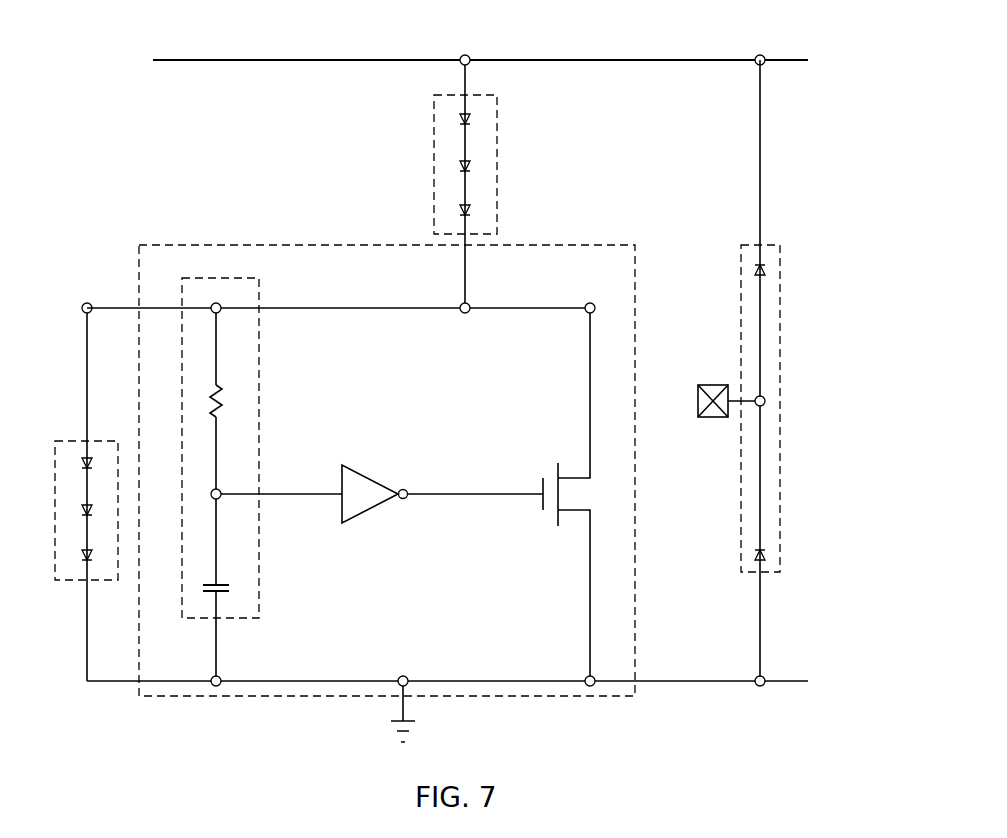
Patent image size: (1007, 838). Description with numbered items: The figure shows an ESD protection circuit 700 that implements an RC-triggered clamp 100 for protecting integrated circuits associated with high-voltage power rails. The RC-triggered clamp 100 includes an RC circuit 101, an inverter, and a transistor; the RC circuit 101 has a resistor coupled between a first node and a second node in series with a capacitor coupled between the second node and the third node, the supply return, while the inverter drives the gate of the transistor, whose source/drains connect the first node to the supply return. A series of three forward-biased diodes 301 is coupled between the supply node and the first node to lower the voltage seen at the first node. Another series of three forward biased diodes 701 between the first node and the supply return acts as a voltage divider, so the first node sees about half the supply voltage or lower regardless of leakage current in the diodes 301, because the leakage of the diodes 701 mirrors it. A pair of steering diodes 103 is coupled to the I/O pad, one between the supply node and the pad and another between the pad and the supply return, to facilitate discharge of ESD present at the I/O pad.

The ESD protection circuit 700 is at (163, 36).
The series of forward-biased diodes 301 is at (497, 95).
The other series of forward biased diodes 701 is at (82, 441).
The RC-triggered clamp 100 is at (635, 245).
The RC circuit 101 is at (259, 278).
The pair of steering diodes 103 is at (780, 245).